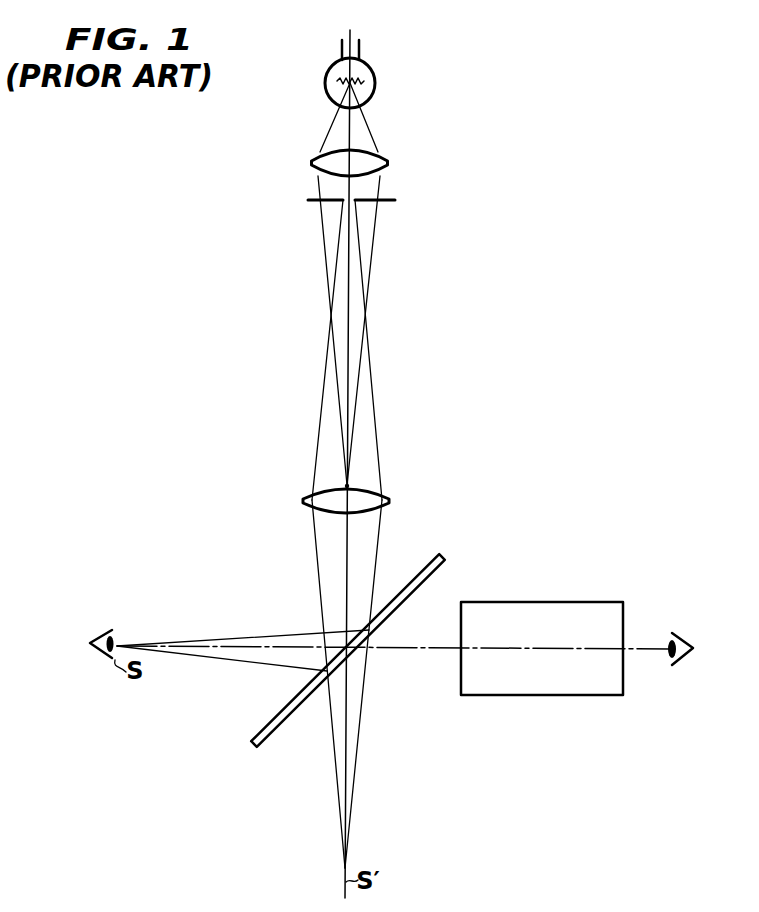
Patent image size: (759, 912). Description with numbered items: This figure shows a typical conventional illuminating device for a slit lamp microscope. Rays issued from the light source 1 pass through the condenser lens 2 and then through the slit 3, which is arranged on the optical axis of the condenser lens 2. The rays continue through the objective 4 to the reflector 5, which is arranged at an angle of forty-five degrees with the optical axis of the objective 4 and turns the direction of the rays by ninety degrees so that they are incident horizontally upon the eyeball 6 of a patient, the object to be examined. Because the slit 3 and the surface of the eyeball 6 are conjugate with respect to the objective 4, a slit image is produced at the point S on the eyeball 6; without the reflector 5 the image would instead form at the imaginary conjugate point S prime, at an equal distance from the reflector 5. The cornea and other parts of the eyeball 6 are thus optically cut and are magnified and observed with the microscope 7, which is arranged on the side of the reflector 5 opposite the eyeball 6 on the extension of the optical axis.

The light source 1 is at (363, 74).
The condenser lens 2 is at (368, 163).
The slit 3 is at (350, 199).
The objective 4 is at (388, 500).
The reflector 5 is at (436, 560).
The eyeball 6 is at (113, 634).
The microscope 7 is at (575, 612).